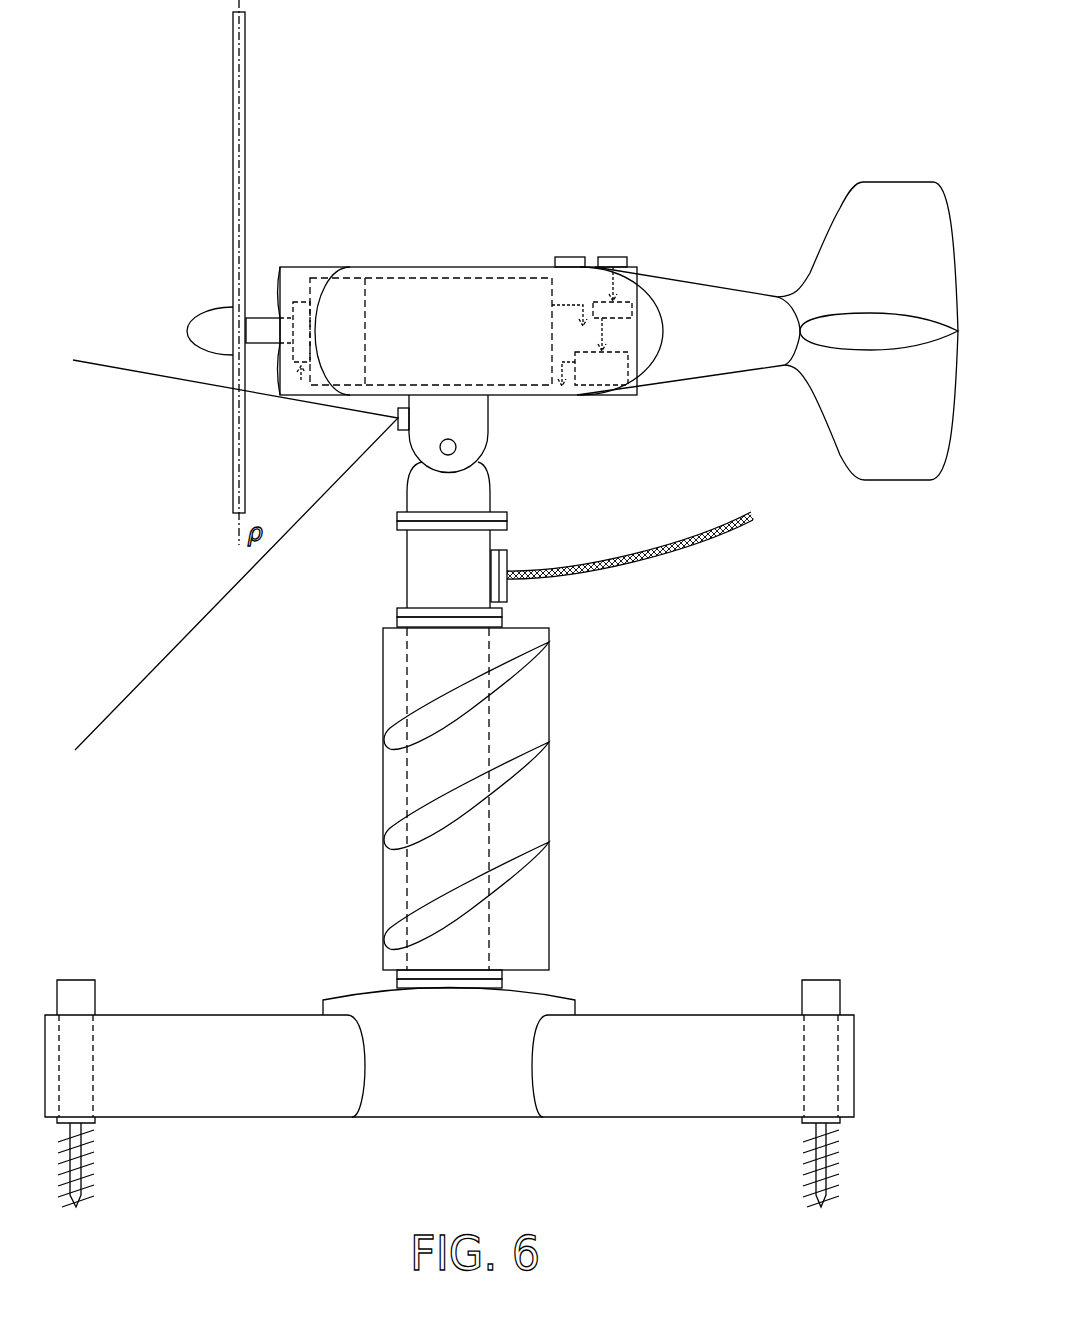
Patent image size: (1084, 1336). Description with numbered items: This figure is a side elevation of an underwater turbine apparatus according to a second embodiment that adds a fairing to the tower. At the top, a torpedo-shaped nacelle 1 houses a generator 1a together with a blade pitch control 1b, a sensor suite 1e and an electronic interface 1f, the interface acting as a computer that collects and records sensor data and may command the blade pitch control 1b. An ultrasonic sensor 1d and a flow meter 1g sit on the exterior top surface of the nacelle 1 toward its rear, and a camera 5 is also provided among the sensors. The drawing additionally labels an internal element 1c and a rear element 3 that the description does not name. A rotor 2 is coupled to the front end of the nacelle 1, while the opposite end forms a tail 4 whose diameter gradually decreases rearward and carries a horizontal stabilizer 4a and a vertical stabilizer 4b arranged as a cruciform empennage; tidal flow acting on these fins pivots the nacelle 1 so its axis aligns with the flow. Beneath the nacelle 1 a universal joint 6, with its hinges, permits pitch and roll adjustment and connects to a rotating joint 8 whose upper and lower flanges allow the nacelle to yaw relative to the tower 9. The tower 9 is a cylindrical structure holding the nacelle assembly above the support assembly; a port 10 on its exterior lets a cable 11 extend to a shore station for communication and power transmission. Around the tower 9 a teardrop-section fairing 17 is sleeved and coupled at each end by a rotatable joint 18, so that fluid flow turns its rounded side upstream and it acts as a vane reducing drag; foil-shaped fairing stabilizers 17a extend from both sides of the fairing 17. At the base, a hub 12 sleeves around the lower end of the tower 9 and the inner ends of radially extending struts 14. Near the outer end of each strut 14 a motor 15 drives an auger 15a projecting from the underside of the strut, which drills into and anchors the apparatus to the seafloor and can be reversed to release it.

The nacelle 1 is at (497, 267).
The generator 1a is at (415, 278).
The blade pitch control 1b is at (298, 302).
The generator casing 1c is at (343, 290).
The ultrasonic sensor 1d is at (620, 257).
The sensor suite 1e is at (617, 305).
The electronic interface 1f is at (598, 375).
The flow meter 1g is at (572, 257).
The rotor 2 is at (232, 395).
The nacelle tail cone 3 is at (653, 340).
The tail 4 is at (713, 300).
The horizontal stabilizer 4a is at (887, 190).
The vertical stabilizer 4b is at (870, 340).
The camera 5 is at (398, 430).
The universal joint 6 is at (470, 420).
The rotating joint 8 is at (503, 530).
The tower 9 is at (407, 580).
The port 10 is at (507, 590).
The cable 11 is at (650, 550).
The hub 12 is at (540, 1000).
The struts 14 is at (215, 1025).
The motor 15 is at (77, 988).
The auger 15a is at (92, 1150).
The fairing 17 is at (540, 905).
The fairing stabilizer 17a is at (420, 800).
The rotatable joint 18 is at (397, 620).